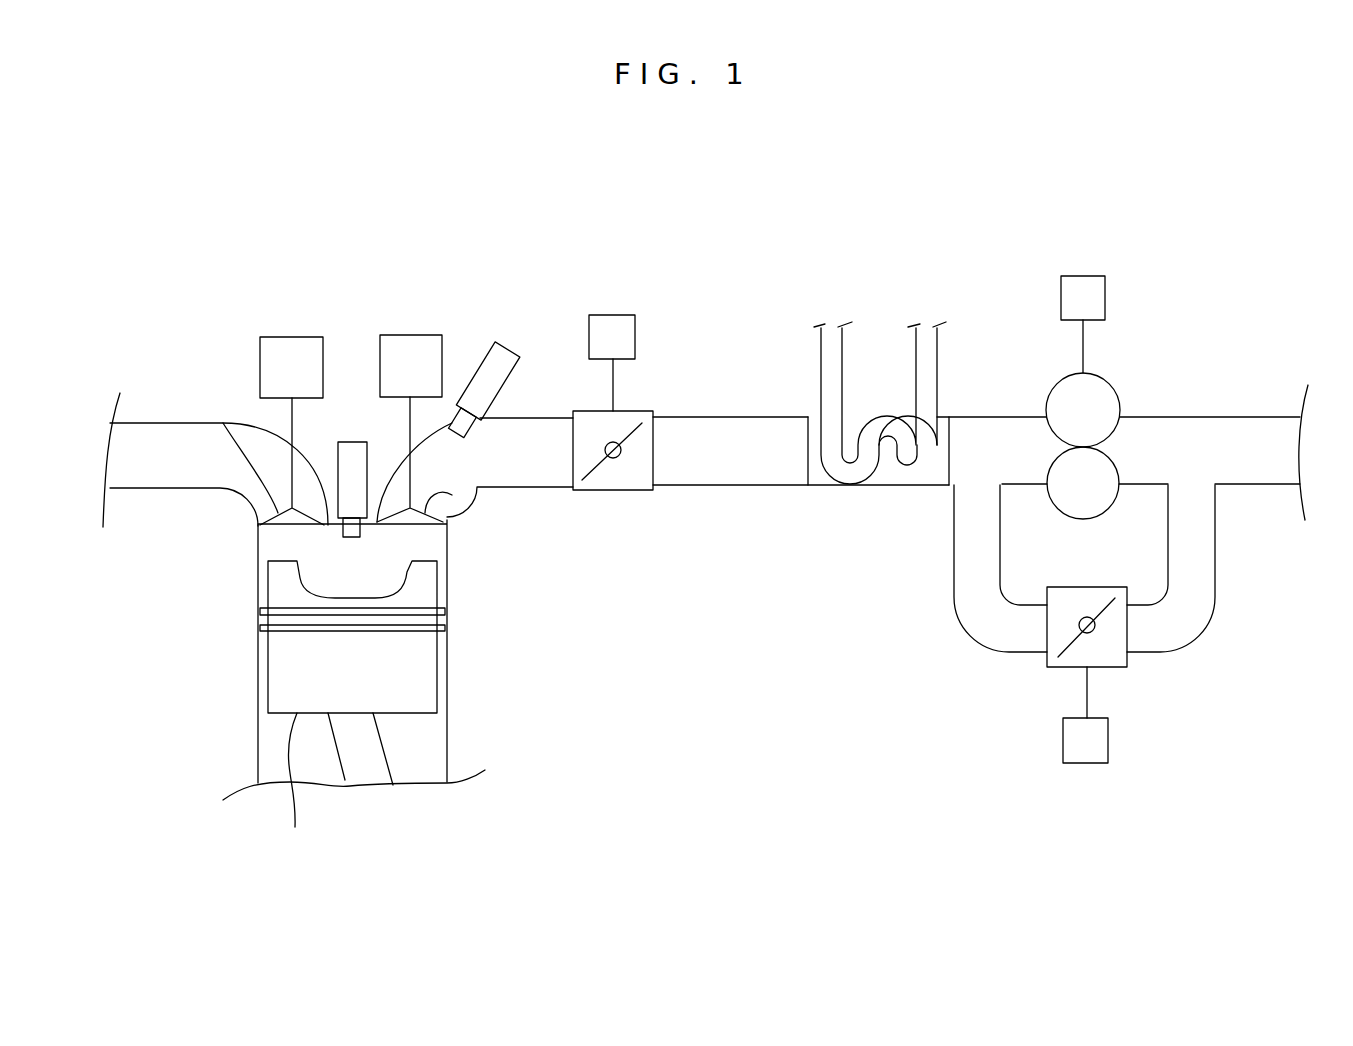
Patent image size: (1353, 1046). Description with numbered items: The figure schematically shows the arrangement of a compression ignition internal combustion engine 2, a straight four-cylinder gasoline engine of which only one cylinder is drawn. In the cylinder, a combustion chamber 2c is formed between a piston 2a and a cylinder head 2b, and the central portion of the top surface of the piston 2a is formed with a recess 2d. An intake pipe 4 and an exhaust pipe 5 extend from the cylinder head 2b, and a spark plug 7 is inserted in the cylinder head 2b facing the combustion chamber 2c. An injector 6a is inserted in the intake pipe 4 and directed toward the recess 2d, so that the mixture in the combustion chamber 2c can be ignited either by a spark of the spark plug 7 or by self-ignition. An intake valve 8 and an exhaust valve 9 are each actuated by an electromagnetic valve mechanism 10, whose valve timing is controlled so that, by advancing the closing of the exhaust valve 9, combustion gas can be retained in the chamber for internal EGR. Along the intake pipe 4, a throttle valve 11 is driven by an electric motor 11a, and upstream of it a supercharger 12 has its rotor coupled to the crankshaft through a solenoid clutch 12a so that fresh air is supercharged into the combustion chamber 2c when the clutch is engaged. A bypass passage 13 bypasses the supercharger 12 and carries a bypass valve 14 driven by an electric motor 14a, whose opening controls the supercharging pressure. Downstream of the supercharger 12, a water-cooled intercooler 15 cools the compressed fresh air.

The engine 2 is at (493, 688).
The piston 2a is at (289, 793).
The cylinder head 2b is at (362, 536).
The combustion chamber 2c is at (330, 577).
The recess 2d is at (373, 597).
The intake pipe 4 is at (742, 485).
The exhaust pipe 5 is at (160, 420).
The injector 6a is at (510, 350).
The spark plug 7 is at (355, 442).
The intake valve 8 is at (452, 495).
The exhaust valve 9 is at (223, 422).
The electromagnetic valve mechanism 10 is at (292, 337).
The throttle valve 11 is at (630, 490).
The electric motor 11a is at (612, 315).
The supercharger 12 is at (1116, 378).
The solenoid clutch 12a is at (1082, 276).
The bypass passage 13 is at (1203, 633).
The bypass valve 14 is at (1043, 652).
The electric motor 14a is at (1087, 763).
The intercooler 15 is at (938, 363).